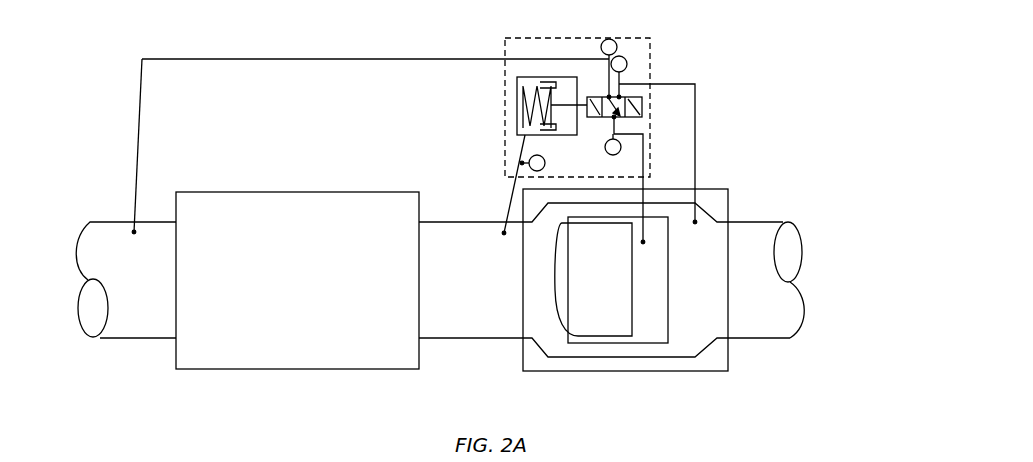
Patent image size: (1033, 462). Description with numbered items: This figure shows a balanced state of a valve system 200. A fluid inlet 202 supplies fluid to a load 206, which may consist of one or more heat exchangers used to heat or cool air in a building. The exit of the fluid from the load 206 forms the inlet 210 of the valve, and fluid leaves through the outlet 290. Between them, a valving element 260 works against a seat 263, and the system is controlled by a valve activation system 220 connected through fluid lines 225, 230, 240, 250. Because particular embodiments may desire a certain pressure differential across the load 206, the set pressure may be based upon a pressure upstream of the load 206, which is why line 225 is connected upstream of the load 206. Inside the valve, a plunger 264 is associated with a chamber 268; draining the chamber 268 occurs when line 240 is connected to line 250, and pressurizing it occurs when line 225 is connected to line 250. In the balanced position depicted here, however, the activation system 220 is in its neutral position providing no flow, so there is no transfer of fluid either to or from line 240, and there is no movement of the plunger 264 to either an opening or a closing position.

The valve system 200 is at (775, 87).
The fluid inlet 202 is at (70, 226).
The load 206 is at (209, 348).
The inlet 210 is at (498, 314).
The valve activation system 220 is at (639, 85).
The line 225 is at (540, 59).
The fluid line 230 is at (524, 152).
The line 240 is at (643, 172).
The line 250 is at (695, 167).
The valving element 260 is at (544, 302).
The seat 263 is at (536, 347).
The plunger 264 is at (568, 277).
The chamber 268 is at (648, 308).
The outlet 290 is at (800, 272).